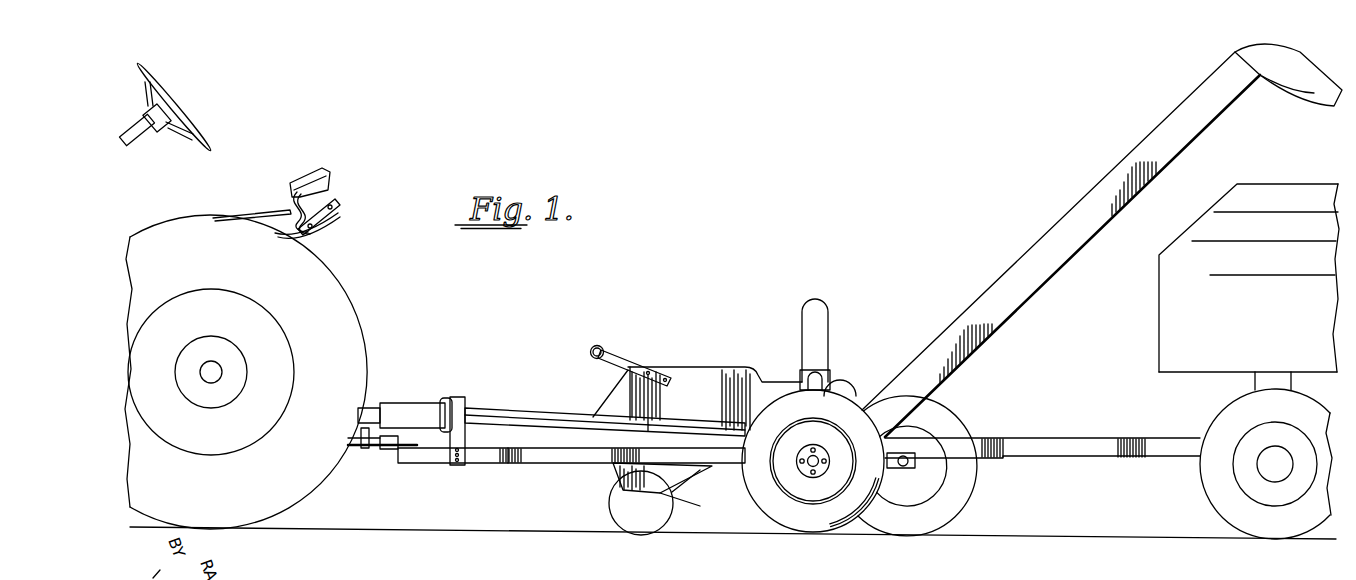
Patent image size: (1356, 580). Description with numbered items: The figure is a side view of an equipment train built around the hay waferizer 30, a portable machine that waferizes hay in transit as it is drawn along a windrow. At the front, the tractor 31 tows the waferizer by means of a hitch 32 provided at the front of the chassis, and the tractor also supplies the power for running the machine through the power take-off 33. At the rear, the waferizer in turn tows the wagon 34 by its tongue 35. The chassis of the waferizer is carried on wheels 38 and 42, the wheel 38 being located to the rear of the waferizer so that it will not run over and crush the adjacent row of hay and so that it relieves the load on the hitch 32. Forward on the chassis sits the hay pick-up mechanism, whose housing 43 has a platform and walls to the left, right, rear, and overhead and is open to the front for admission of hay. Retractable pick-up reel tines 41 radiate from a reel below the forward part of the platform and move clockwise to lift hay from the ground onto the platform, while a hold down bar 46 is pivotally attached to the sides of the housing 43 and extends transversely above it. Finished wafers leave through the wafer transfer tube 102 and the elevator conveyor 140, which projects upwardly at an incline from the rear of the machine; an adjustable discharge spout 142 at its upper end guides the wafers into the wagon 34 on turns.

The hay waferizer 30 is at (722, 305).
The tractor 31 is at (268, 160).
The hitch 32 is at (395, 452).
The power take-off 33 is at (385, 405).
The wagon 34 is at (1155, 284).
The tongue 35 is at (1130, 420).
The wheel 38 is at (955, 426).
The pick-up reel tines 41 is at (590, 468).
The wheel 42 is at (848, 407).
The housing 43 is at (700, 375).
The hold down bar 46 is at (597, 346).
The wafer transfer tube 102 is at (820, 307).
The elevator conveyor 140 is at (1040, 225).
The adjustable discharge spout 142 is at (1314, 92).